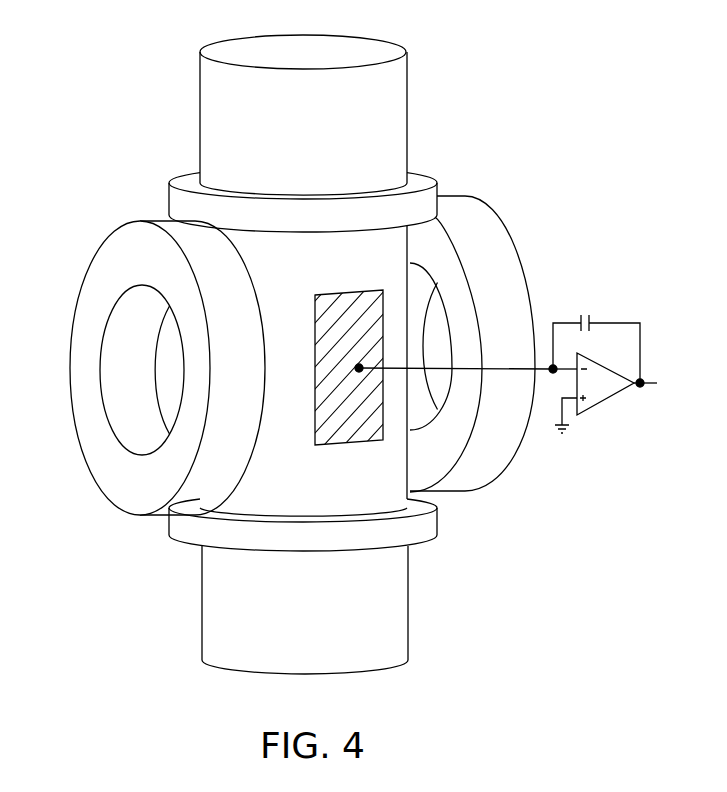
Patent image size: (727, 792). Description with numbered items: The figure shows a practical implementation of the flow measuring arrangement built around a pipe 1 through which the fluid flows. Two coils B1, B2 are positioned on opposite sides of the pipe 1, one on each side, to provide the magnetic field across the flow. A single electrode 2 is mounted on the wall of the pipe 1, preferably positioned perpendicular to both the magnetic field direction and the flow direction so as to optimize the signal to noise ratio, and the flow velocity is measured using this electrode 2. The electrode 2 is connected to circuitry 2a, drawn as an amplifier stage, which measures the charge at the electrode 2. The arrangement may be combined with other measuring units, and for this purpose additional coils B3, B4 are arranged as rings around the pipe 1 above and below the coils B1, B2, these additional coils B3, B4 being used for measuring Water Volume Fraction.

The pipe 1 is at (303, 115).
The electrode 2 is at (333, 446).
The circuitry 2a is at (508, 374).
The coil B1 is at (523, 302).
The coil B2 is at (104, 255).
The additional coil B3 is at (431, 185).
The additional coil B4 is at (433, 527).